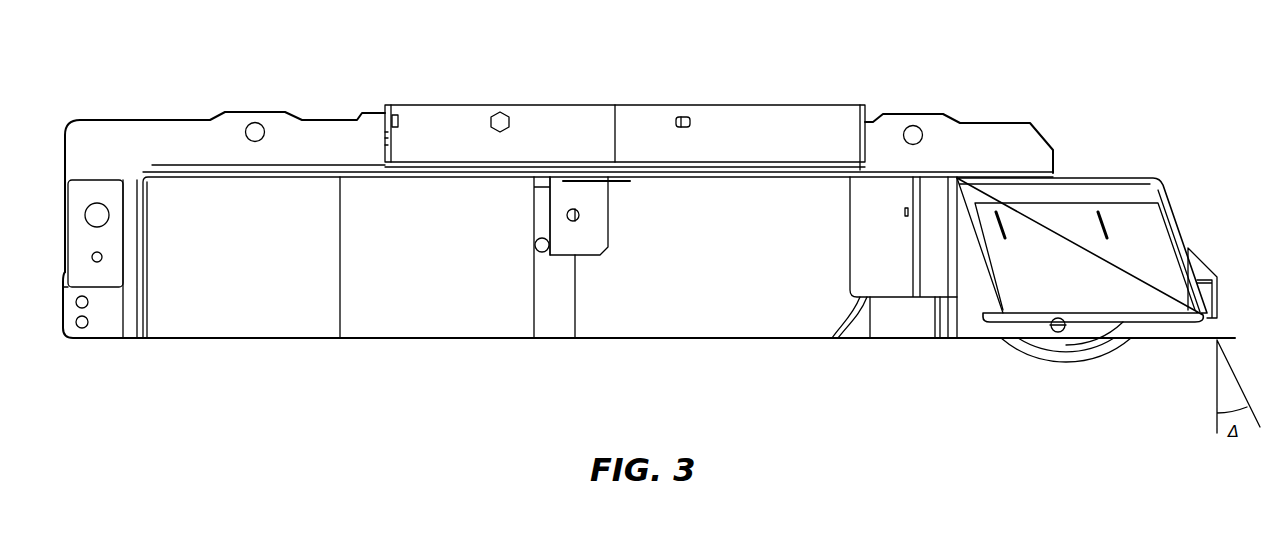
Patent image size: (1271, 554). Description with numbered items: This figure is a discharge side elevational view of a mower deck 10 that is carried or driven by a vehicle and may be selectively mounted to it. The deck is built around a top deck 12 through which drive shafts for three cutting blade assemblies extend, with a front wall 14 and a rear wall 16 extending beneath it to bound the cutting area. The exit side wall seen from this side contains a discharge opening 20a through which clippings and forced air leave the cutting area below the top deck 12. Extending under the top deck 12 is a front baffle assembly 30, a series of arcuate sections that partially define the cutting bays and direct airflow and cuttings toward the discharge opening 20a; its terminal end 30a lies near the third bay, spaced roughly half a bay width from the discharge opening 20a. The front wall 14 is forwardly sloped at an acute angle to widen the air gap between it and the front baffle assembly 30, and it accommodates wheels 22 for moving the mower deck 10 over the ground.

The mower deck 10 is at (916, 55).
The top deck 12 is at (663, 167).
The front wall 14 is at (1083, 192).
The rear wall 16 is at (175, 303).
The discharge opening 20a is at (425, 304).
The wheels 22 is at (1073, 355).
The front baffle assembly 30 is at (887, 297).
The terminal end 30a is at (928, 267).